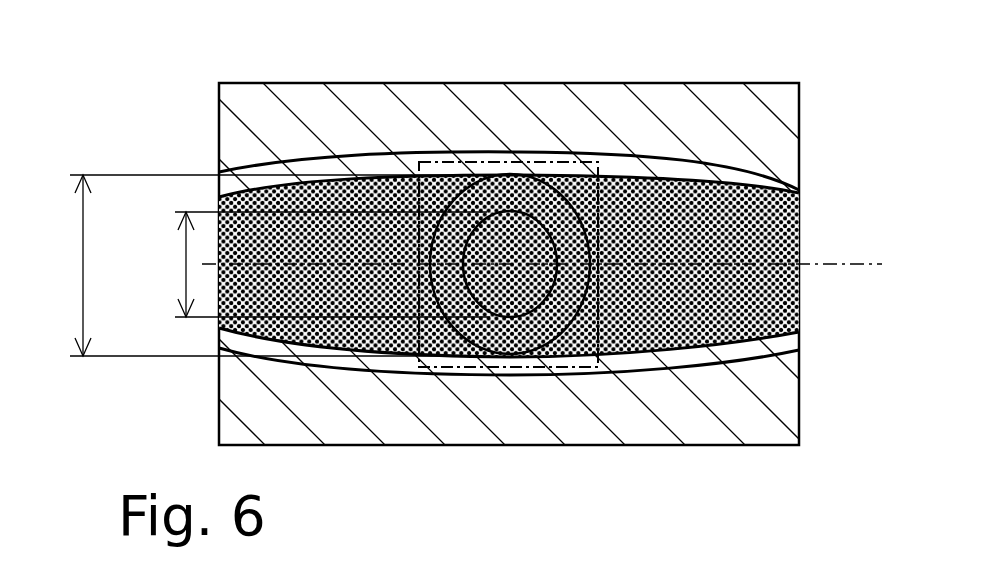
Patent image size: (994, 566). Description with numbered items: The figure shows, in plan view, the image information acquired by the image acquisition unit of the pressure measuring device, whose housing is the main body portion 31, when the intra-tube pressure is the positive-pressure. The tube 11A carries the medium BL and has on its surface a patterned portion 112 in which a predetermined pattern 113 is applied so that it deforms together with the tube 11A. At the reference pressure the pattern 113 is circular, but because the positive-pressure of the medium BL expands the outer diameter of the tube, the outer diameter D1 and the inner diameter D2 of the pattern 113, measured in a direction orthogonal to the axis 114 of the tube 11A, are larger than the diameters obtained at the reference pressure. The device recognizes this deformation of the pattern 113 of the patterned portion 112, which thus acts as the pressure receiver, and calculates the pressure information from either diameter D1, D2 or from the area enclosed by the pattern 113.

The main body portion 31 is at (752, 108).
The medium BL is at (770, 237).
The tube 11A is at (752, 173).
The pattern 113 is at (578, 217).
The patterned portion 112 is at (524, 162).
The axis 114 is at (840, 265).
The outer diameter D1 is at (252, 265).
The inner diameter D2 is at (307, 264).